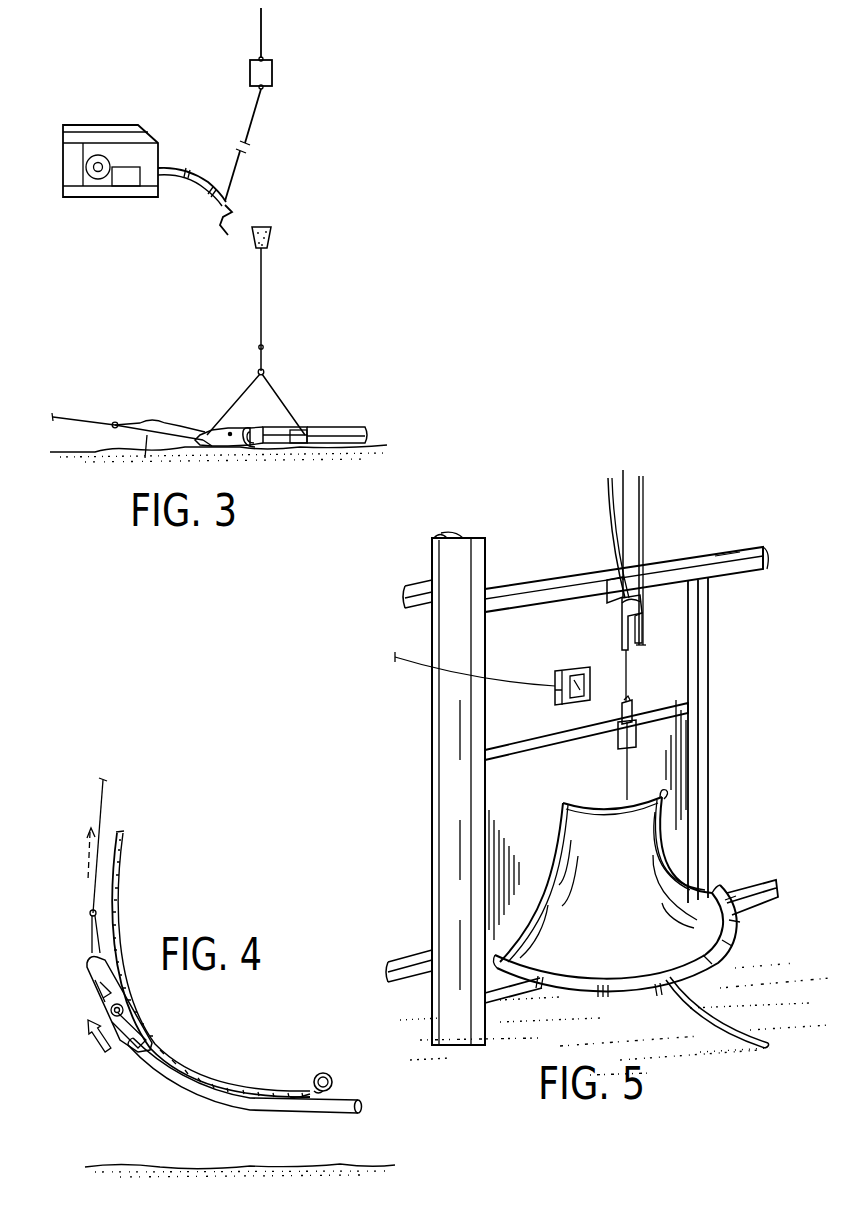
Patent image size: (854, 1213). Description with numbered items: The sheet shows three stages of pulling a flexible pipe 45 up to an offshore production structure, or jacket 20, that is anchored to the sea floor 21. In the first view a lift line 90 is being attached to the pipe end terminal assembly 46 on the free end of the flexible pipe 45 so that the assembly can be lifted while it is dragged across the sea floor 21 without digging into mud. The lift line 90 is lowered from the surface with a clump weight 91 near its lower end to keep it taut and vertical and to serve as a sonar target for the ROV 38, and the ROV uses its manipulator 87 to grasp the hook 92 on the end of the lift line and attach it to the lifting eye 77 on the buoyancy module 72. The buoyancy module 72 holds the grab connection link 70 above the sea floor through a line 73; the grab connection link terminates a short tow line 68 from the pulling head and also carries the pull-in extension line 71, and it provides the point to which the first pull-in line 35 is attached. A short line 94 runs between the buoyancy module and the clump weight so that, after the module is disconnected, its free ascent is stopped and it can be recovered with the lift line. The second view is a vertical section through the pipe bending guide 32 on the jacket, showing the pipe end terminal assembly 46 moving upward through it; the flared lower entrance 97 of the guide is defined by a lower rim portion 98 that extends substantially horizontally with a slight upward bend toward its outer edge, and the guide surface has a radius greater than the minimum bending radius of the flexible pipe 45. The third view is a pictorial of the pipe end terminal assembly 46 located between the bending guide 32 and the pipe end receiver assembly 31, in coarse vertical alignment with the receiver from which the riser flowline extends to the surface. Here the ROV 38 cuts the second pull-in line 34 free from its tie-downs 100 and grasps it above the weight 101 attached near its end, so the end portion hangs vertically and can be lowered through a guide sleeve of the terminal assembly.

In FIG. 5, the offshore oil and/or gas production structure 20 is at (433, 558).
In FIG. 3, the sea floor 21 is at (93, 451).
In FIG. 4, the sea floor 21 is at (148, 1166).
In FIG. 5, the pipe end receiver assembly 31 is at (622, 616).
In FIG. 4, the pipe bending guide 32 is at (121, 882).
In FIG. 5, the pipe bending guide 32 is at (656, 873).
In FIG. 5, the pull-in line 34 is at (655, 590).
In FIG. 3, the pull-in line 35 is at (80, 423).
In FIG. 4, the pull-in line 35 is at (99, 792).
In FIG. 5, the pull-in line 35 is at (632, 677).
In FIG. 3, the ROV 38 is at (133, 125).
In FIG. 5, the ROV 38 is at (563, 683).
In FIG. 3, the flexible pipe 45 is at (355, 430).
In FIG. 4, the flexible pipe 45 is at (217, 1098).
In FIG. 5, the flexible pipe 45 is at (675, 1008).
In FIG. 3, the pipe end terminal assembly 46 is at (297, 406).
In FIG. 4, the pipe end terminal assembly 46 is at (90, 977).
In FIG. 5, the pipe end terminal assembly 46 is at (612, 743).
In FIG. 3, the tow line 68 is at (145, 458).
In FIG. 3, the grab connection link 70 is at (118, 424).
In FIG. 3, the pull-in extension line 71 is at (215, 446).
In FIG. 3, the buoyancy module 72 is at (270, 243).
In FIG. 3, the line 73 is at (258, 320).
In FIG. 3, the lifting eye 77 is at (259, 227).
In FIG. 3, the manipulator 87 is at (215, 165).
In FIG. 3, the lift line 90 is at (262, 28).
In FIG. 3, the clump weight 91 is at (273, 75).
In FIG. 3, the hook 92 is at (222, 225).
In FIG. 3, the short line 94 is at (253, 108).
In FIG. 4, the lower horizontal entrance 97 is at (353, 1092).
In FIG. 4, the lower rim portion 98 is at (290, 1096).
In FIG. 5, the tie-downs 100 is at (728, 568).
In FIG. 5, the weight 101 is at (730, 556).